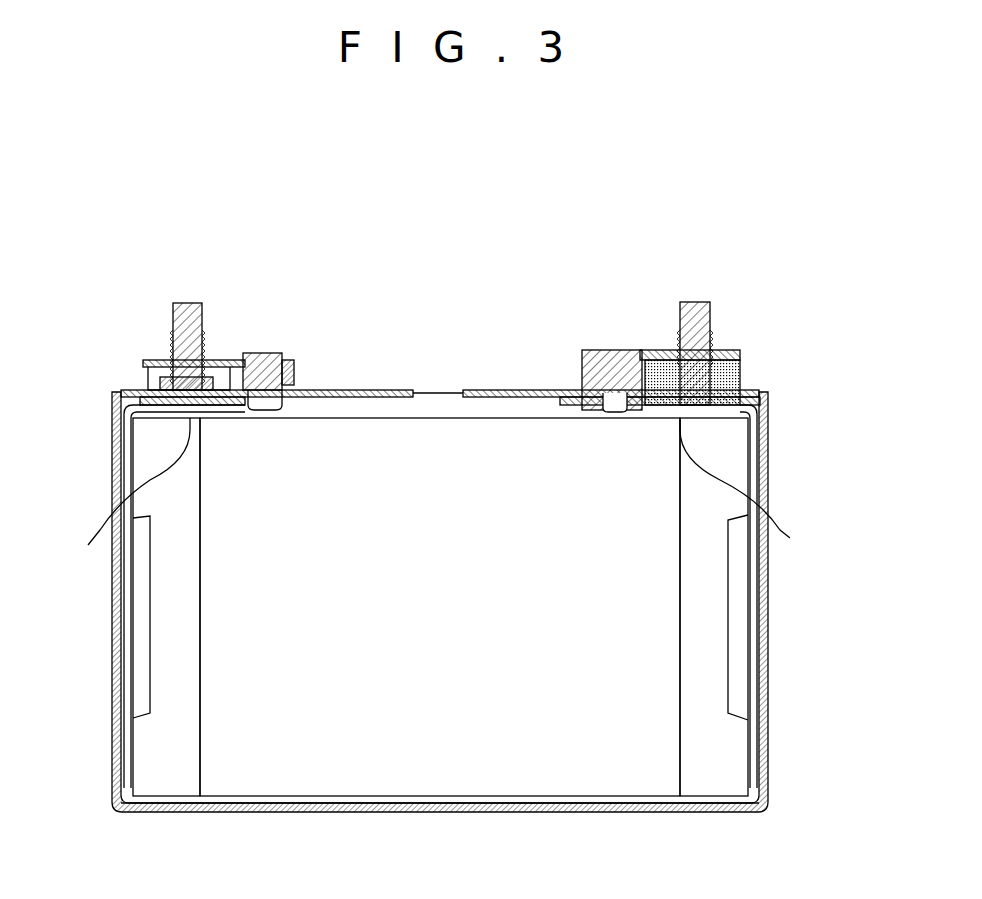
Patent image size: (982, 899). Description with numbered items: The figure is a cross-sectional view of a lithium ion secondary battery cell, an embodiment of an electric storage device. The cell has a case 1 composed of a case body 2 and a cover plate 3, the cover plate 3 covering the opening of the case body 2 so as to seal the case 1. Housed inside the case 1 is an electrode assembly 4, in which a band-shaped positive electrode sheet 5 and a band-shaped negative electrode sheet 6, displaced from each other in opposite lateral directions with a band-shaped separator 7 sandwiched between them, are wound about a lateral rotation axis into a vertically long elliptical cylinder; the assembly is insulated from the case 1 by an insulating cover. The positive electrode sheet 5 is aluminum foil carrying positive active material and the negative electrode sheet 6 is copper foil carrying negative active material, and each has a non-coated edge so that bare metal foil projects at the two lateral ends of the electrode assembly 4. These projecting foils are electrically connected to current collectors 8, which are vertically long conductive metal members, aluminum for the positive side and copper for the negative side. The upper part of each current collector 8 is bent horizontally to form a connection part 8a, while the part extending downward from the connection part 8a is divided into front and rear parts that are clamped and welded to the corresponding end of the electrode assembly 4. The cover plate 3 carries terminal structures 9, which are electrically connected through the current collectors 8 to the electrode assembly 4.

The case 1 is at (871, 372).
The case body 2 is at (770, 470).
The cover plate 3 is at (748, 392).
The electrode assembly 4 is at (483, 798).
The positive electrode sheet 5 is at (169, 780).
The negative electrode sheet 6 is at (708, 778).
The separator 7 is at (357, 780).
The current collector 8 is at (140, 610).
The connection part 8a is at (438, 490).
The terminal structure 9 is at (248, 325).